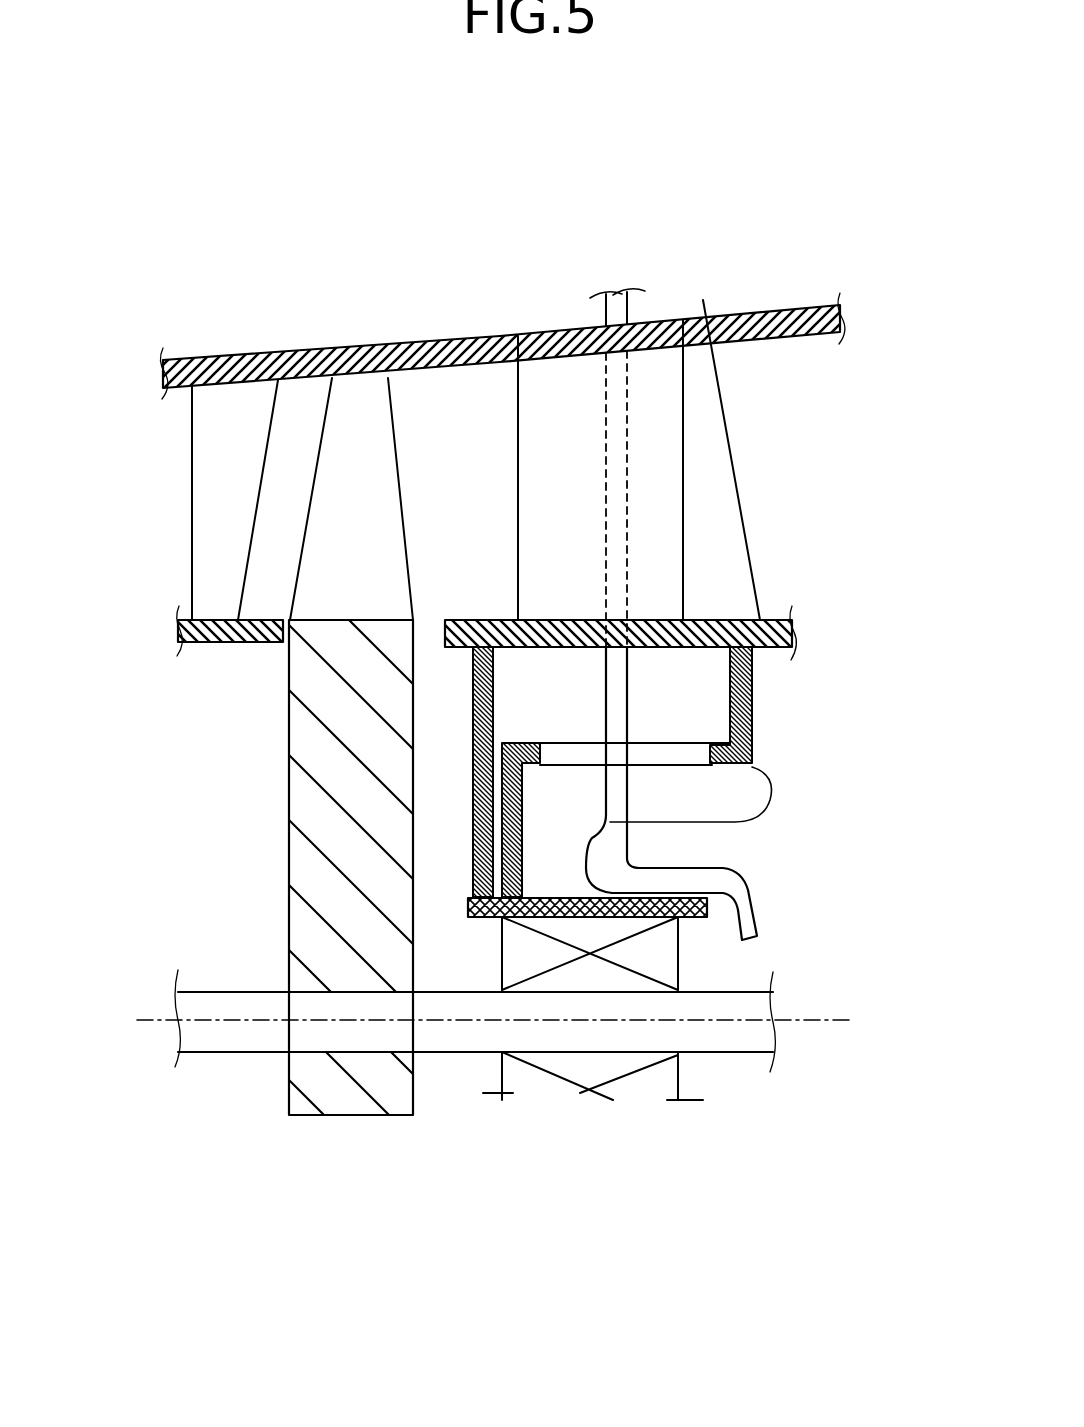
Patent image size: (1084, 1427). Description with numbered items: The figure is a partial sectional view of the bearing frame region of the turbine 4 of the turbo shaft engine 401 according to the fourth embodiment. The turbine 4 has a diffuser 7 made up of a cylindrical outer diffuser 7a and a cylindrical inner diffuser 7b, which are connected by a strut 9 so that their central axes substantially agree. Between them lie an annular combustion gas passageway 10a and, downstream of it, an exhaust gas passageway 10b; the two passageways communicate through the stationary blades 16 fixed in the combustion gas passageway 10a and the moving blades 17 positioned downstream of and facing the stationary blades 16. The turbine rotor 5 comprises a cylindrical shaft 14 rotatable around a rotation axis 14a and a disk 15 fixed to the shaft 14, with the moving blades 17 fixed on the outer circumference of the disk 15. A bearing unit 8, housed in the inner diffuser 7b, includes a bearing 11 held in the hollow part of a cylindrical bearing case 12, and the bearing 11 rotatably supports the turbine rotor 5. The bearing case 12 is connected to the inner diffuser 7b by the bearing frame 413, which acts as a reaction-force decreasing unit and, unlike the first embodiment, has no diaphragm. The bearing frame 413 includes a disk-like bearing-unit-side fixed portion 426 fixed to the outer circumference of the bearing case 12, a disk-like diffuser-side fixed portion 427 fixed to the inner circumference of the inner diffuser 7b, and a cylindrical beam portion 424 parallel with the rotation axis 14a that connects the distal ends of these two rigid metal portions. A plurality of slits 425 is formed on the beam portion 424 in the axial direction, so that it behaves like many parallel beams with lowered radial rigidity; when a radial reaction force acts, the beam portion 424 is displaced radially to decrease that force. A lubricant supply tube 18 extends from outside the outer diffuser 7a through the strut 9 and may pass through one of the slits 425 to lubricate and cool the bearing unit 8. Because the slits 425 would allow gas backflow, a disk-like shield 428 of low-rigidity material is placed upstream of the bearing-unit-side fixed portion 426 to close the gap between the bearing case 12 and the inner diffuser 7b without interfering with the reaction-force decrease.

The turbo shaft engine 401 is at (401, 115).
The turbine 4 is at (452, 340).
The combustion gas passageway 10a is at (290, 465).
The strut 9 is at (550, 395).
The diffuser 7 is at (786, 363).
The inner diffuser 7b is at (704, 301).
The outer diffuser 7a is at (793, 395).
The stationary blades 16 is at (217, 516).
The moving blades 17 is at (338, 577).
The disk 15 is at (327, 1083).
The bearing-unit-side fixed portion 426 is at (473, 838).
The shield 428 is at (473, 690).
The beam portion 424 is at (490, 823).
The slits 425 is at (553, 750).
The exhaust gas passageway 10b is at (717, 557).
The lubricant supply tube 18 is at (752, 887).
The diffuser-side fixed portion 427 is at (587, 917).
The bearing case 12 is at (708, 908).
The bearing 11 is at (663, 1080).
The shaft 14 is at (258, 1035).
The rotation axis 14a is at (146, 1018).
The turbine rotor 5 is at (180, 1105).
The bearing unit 8 is at (793, 1093).
The bearing frame 413 is at (275, 1283).